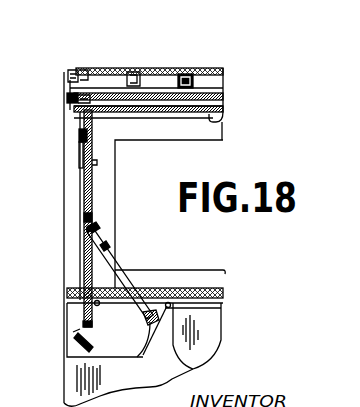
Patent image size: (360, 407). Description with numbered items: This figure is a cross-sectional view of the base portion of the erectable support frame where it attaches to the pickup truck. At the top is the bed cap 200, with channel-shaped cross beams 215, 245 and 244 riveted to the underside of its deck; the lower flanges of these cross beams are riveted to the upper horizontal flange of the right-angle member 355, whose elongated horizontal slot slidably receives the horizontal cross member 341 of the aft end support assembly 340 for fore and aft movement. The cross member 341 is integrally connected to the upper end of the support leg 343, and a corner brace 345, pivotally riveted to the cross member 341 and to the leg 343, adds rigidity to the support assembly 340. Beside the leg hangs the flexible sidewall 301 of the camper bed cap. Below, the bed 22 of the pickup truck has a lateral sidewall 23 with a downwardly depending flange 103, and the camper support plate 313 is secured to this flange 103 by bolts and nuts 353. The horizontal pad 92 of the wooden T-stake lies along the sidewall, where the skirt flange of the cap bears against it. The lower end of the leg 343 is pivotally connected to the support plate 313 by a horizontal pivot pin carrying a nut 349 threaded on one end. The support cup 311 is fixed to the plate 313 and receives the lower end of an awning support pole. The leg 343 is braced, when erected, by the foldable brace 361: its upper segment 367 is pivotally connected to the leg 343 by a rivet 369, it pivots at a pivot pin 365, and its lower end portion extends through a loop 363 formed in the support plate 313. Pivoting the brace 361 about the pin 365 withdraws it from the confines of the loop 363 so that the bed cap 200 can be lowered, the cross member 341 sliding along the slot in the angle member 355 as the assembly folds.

The bed cap 200 is at (216, 67).
The cross beam 215 is at (88, 68).
The cross beam 245 is at (138, 70).
The cross beam 244 is at (190, 73).
The horizontal cross member 341 is at (68, 100).
The angle member 355 is at (224, 118).
The corner brace 345 is at (78, 152).
The flexible sidewall 301 is at (74, 178).
The aft end support assembly 340 is at (80, 203).
The support leg 343 is at (85, 218).
The rivet 369 is at (90, 229).
The segment 367 is at (96, 230).
The pivot pin 365 is at (104, 246).
The foldable brace 361 is at (117, 265).
The horizontal pad 92 is at (226, 274).
The downwardly depending flange 103 is at (219, 298).
The bed 22 is at (226, 321).
The lateral sidewall 23 is at (203, 345).
The nut 353 is at (94, 303).
The nut 349 is at (84, 325).
The camper support plate 313 is at (130, 343).
The support cup 311 is at (75, 345).
The loop 363 is at (137, 357).